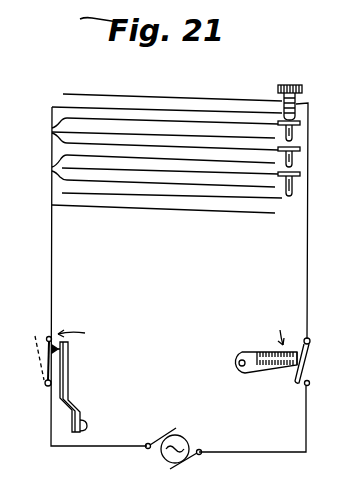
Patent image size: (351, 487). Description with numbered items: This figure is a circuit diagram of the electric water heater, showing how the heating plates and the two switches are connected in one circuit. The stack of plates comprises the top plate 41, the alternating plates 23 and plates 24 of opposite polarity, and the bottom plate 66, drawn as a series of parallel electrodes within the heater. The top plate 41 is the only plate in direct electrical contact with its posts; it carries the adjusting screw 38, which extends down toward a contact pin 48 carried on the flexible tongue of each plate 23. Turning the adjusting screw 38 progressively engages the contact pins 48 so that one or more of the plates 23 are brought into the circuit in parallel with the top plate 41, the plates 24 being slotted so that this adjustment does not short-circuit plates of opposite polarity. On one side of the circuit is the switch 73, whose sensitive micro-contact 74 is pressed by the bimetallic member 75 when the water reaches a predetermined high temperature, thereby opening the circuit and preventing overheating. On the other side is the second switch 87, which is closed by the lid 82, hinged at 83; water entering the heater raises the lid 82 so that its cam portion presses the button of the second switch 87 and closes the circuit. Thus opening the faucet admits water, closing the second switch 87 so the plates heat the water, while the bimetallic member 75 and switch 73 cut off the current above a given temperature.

The top plate 41 is at (111, 94).
The adjusting screw 38 is at (292, 87).
The plates 23 is at (52, 131).
The plates 24 is at (52, 170).
The contact pin 48 is at (293, 133).
The bottom plate 66 is at (175, 214).
The micro-contact 74 is at (45, 339).
The switch 73 is at (48, 360).
The bimetallic member 75 is at (69, 373).
The lid 82 is at (266, 348).
The hinge 83 is at (239, 364).
The second switch 87 is at (303, 366).